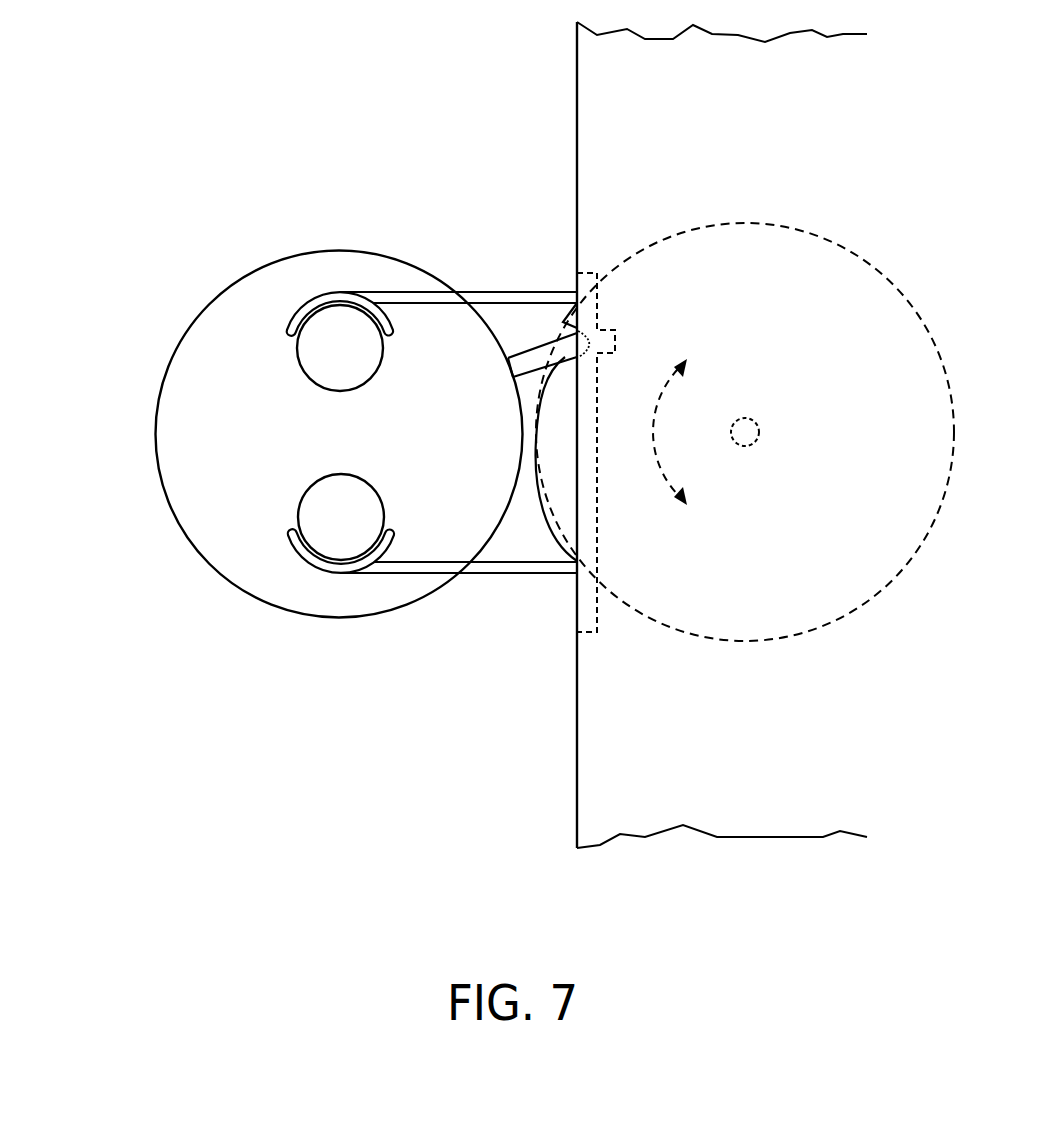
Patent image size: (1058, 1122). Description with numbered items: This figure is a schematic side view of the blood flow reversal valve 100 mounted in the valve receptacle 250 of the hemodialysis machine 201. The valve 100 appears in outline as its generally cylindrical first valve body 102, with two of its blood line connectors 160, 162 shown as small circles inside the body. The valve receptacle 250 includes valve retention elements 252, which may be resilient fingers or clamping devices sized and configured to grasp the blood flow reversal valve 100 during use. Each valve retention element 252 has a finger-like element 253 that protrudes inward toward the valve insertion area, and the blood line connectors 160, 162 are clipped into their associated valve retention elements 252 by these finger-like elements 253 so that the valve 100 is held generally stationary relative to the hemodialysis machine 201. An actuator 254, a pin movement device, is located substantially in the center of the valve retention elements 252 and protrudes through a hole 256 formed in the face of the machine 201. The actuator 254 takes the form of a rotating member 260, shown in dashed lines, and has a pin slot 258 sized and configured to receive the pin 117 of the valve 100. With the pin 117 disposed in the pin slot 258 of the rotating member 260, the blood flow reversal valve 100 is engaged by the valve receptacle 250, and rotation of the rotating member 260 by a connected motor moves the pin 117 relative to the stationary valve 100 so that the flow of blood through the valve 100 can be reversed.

The blood flow reversal valve 100 is at (286, 438).
The first valve body 102 is at (183, 392).
The pin 117 is at (540, 356).
The blood line connector 160 is at (313, 360).
The blood line connector 162 is at (313, 512).
The hemodialysis machine 201 is at (577, 113).
The valve receptacle 250 is at (484, 419).
The valve retention elements 252 is at (517, 293).
The finger-like elements 253 is at (293, 310).
The actuator 254 is at (550, 615).
The hole 256 is at (577, 607).
The pin slot 258 is at (533, 382).
The rotating member 260 is at (562, 494).